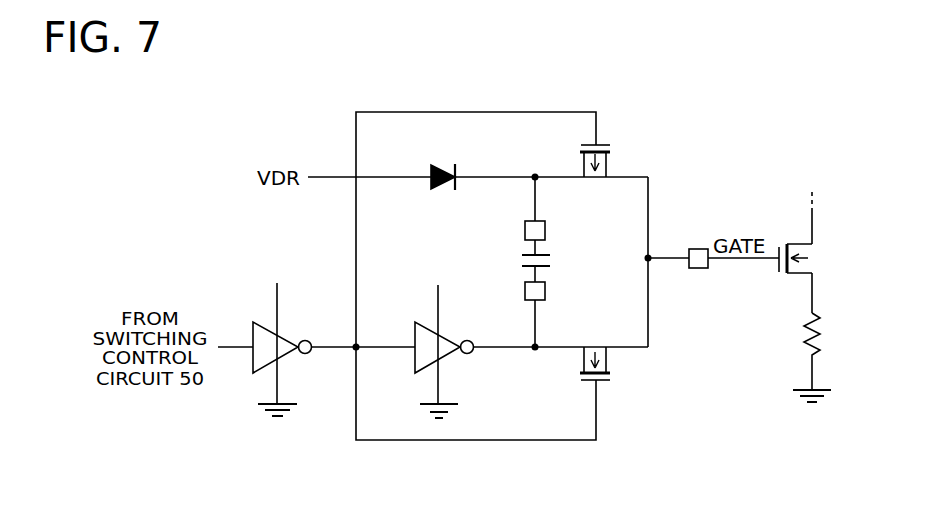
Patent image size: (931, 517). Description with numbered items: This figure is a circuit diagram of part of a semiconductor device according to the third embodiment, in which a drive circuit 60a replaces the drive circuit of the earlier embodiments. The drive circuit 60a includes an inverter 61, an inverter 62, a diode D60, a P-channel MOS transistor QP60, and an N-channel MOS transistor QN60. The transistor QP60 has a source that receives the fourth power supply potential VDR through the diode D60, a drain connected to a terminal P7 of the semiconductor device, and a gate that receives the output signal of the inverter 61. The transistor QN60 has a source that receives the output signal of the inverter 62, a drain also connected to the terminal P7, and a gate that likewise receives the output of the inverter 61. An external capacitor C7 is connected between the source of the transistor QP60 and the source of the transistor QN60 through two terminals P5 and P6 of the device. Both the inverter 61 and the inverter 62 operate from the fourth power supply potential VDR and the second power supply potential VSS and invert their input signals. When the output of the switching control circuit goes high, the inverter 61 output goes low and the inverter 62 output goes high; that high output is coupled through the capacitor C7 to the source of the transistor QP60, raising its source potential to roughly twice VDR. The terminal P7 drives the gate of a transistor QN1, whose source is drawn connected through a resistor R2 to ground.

The drive circuit 60a is at (472, 80).
The inverter 61 is at (288, 333).
The inverter 62 is at (448, 334).
The diode D60 is at (537, 163).
The P-channel MOS transistor QP60 is at (596, 175).
The N-channel MOS transistor QN60 is at (598, 349).
The terminal P5 is at (523, 215).
The terminal P6 is at (522, 316).
The terminal P7 is at (712, 247).
The external capacitor C7 is at (553, 267).
The N-channel transistor QN1 is at (822, 252).
The resistor R2 is at (823, 357).